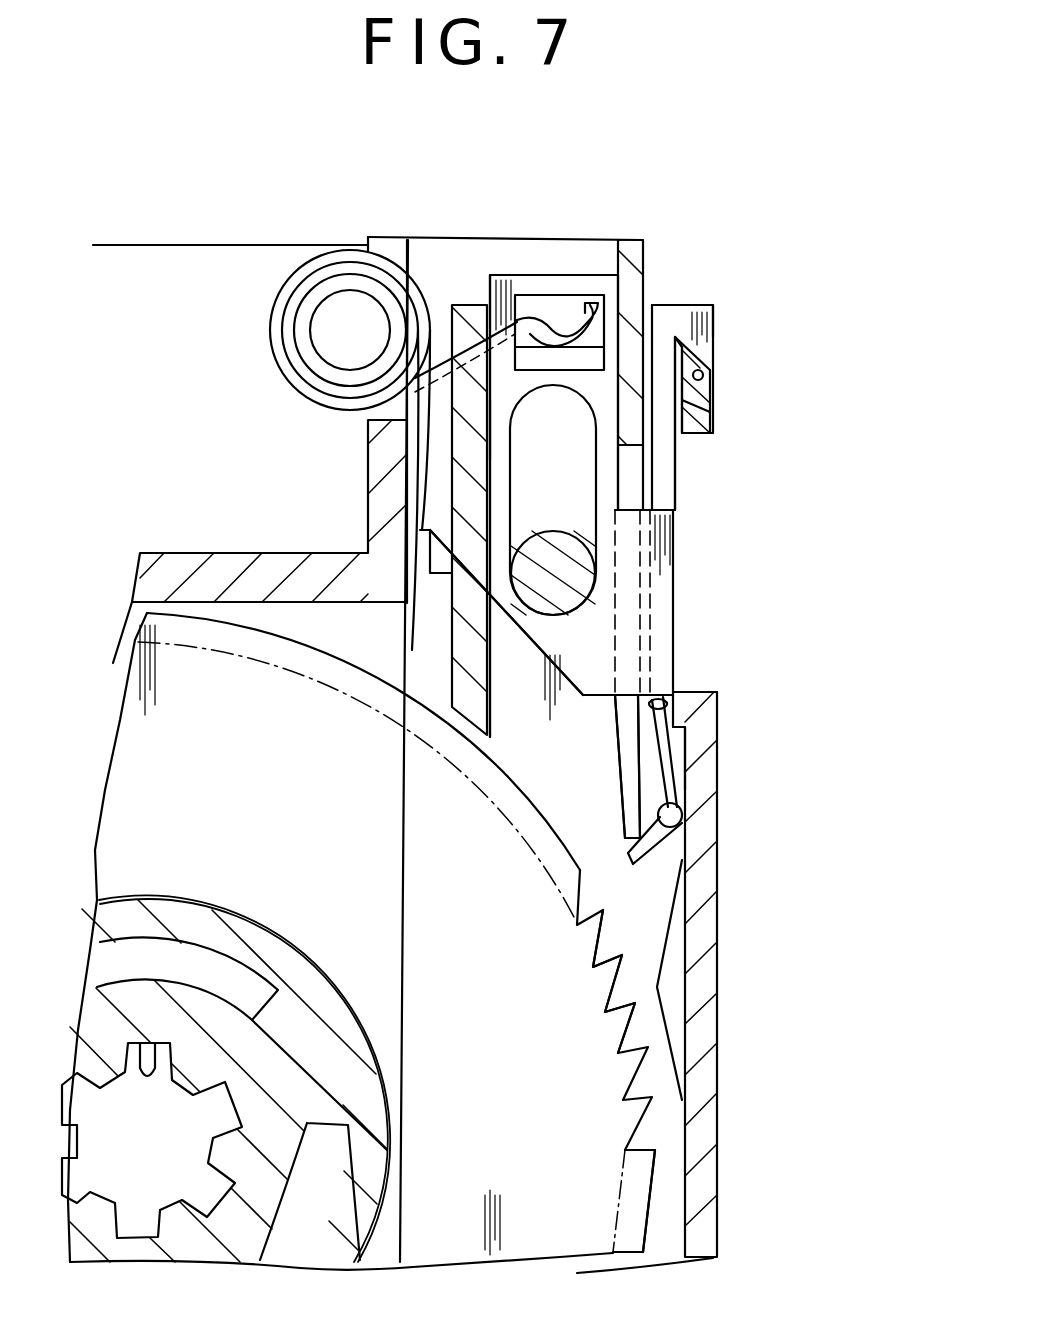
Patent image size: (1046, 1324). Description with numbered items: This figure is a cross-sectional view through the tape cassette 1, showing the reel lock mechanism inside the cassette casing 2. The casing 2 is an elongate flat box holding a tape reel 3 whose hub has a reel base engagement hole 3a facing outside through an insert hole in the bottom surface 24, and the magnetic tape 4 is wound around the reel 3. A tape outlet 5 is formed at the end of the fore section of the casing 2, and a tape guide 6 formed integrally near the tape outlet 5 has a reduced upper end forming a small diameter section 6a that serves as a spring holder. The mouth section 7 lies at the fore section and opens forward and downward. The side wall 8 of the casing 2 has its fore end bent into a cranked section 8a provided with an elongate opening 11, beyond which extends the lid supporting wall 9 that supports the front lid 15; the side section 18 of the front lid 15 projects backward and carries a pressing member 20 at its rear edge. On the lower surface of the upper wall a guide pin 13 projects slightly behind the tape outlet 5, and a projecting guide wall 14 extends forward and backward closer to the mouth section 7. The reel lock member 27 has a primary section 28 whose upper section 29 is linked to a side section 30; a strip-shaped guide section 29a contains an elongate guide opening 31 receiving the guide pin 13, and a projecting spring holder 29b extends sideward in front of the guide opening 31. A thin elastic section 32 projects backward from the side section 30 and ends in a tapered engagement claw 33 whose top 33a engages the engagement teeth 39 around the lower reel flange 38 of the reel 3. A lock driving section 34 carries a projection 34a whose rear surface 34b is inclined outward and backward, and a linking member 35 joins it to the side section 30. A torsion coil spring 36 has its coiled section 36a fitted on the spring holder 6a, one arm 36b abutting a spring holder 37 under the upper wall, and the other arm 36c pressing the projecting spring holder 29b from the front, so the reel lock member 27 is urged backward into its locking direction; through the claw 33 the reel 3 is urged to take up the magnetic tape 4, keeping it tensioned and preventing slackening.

The clip device 1 is at (752, 207).
The cassette casing 2 is at (707, 1170).
The tape reel 3 is at (662, 1140).
The reel base engagement hole 3a is at (148, 1060).
The magnetic tape 4 is at (181, 245).
The tape outlet 5 is at (491, 260).
The tape guide 6 is at (390, 257).
The small diameter section 6a is at (347, 283).
The mouth section 7 is at (162, 450).
The side wall 8 is at (712, 1021).
The cranked section 8a is at (703, 692).
The lid supporting wall 9 is at (647, 277).
The elongate opening 11 is at (660, 698).
The guide pin 13 is at (540, 550).
The projecting guide wall 14 is at (473, 300).
The front lid 15 is at (712, 427).
The side section 18 is at (712, 412).
The pressing member 20 is at (703, 393).
The bottom surface 24 is at (707, 1127).
The reel lock member 27 is at (563, 673).
The primary section 28 is at (600, 677).
The upper section 29 is at (555, 660).
The guide section 29a is at (500, 428).
The projecting spring holder 29b is at (580, 310).
The side section 30 is at (623, 612).
The guide opening 31 is at (530, 610).
The elastic section 32 is at (673, 763).
The engagement claw 33 is at (678, 820).
The top of engagement claw 33a is at (663, 865).
The lock driving section 34 is at (700, 305).
The projection 34a is at (702, 327).
The rear surface 34b is at (708, 372).
The linking member 35 is at (667, 468).
The torsion coil spring 36 is at (317, 267).
The coiled section 36a is at (300, 277).
The arm 36b is at (445, 490).
The other arm 36c is at (555, 330).
The spring holder 37 is at (443, 563).
The lower reel flange 38 is at (588, 1077).
The engagement teeth 39 is at (603, 923).